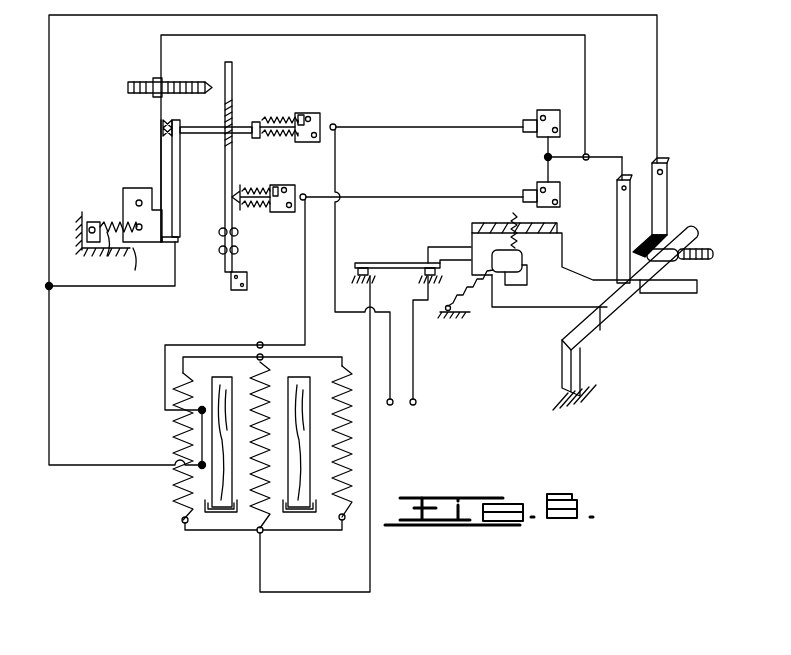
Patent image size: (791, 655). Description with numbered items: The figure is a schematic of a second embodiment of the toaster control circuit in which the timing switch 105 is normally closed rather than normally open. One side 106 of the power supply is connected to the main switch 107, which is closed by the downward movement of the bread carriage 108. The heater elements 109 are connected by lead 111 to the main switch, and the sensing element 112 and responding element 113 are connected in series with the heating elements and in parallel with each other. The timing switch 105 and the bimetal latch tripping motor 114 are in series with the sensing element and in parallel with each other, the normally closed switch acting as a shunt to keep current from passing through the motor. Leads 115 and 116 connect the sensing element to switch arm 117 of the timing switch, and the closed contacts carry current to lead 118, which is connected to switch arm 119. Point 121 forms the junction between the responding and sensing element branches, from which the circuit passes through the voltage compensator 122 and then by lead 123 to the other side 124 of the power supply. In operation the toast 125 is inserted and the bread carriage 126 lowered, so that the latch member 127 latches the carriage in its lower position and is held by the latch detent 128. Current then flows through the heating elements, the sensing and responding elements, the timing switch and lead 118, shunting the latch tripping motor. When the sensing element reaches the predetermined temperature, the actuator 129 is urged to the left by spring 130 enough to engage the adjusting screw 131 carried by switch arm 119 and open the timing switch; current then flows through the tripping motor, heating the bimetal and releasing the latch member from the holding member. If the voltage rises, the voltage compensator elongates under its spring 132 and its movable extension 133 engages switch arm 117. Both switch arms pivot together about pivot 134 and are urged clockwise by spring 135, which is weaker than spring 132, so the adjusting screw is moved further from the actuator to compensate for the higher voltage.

The timing switch 105 is at (152, 128).
The side of the power supply 106 is at (416, 403).
The main switch 107 is at (427, 268).
The bread carriage 108 is at (541, 243).
The heater elements 109 is at (257, 438).
The lead 111 is at (370, 480).
The sensing element 112 is at (202, 445).
The responding element 113 is at (398, 198).
The bimetal latch tripping motor 114 is at (667, 208).
The lead 115 is at (49, 371).
The lead 116 is at (132, 287).
The switch arm 117 is at (180, 196).
The lead 118 is at (393, 36).
The switch arm 119 is at (160, 164).
The junction point 121 is at (545, 158).
The voltage compensator 122 is at (430, 126).
The lead 123 is at (337, 164).
The side of the power supply 124 is at (392, 405).
The toast 125 is at (316, 365).
The bread carriage 126 is at (222, 514).
The latch member 127 is at (560, 300).
The latch detent 128 is at (620, 310).
The actuator 129 is at (232, 163).
The spring 130 is at (262, 188).
The adjusting screw 131 is at (172, 88).
The spring 132 is at (277, 117).
The movable extension 133 is at (237, 124).
The pivot 134 is at (135, 203).
The spring 135 is at (107, 243).